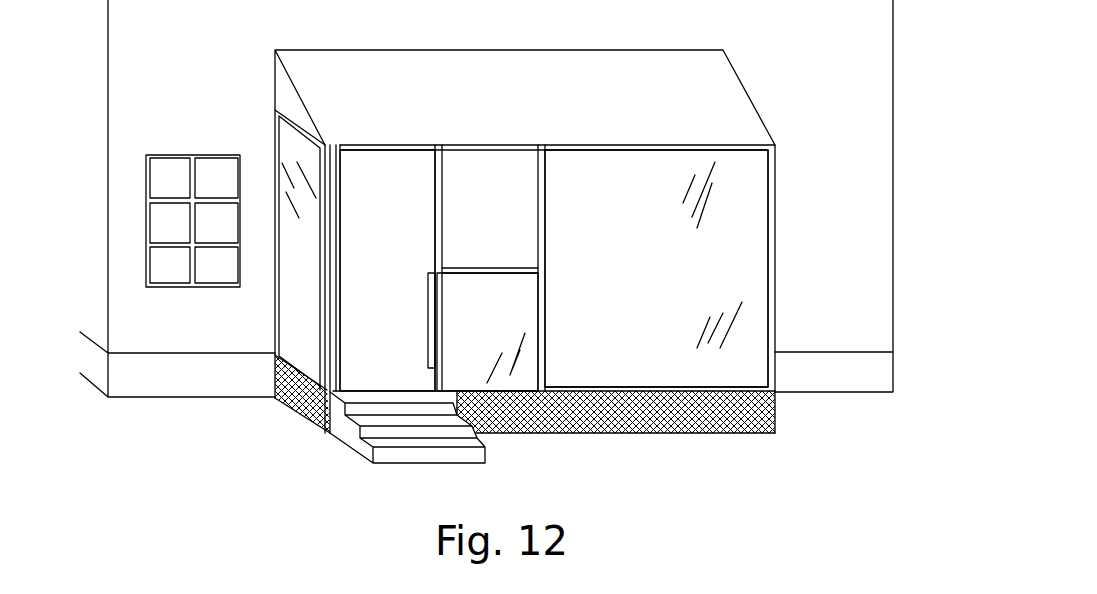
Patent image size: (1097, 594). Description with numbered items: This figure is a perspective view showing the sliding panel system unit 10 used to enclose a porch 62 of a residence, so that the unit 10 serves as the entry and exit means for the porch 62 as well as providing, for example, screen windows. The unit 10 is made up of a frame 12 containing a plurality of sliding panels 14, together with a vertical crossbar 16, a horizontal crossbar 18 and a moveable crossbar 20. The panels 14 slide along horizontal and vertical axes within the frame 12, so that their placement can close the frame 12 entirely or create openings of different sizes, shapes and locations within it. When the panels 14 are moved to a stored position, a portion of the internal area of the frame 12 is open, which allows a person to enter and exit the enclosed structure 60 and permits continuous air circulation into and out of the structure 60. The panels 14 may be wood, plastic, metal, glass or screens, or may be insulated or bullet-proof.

The sliding panel system unit 10 is at (305, 325).
The frame 12 is at (542, 237).
The sliding panels 14 is at (501, 333).
The vertical crossbar 16 is at (438, 200).
The horizontal crossbar 18 is at (506, 270).
The moveable crossbar 20 is at (428, 342).
The structure 60 is at (198, 41).
The porch 62 is at (776, 362).